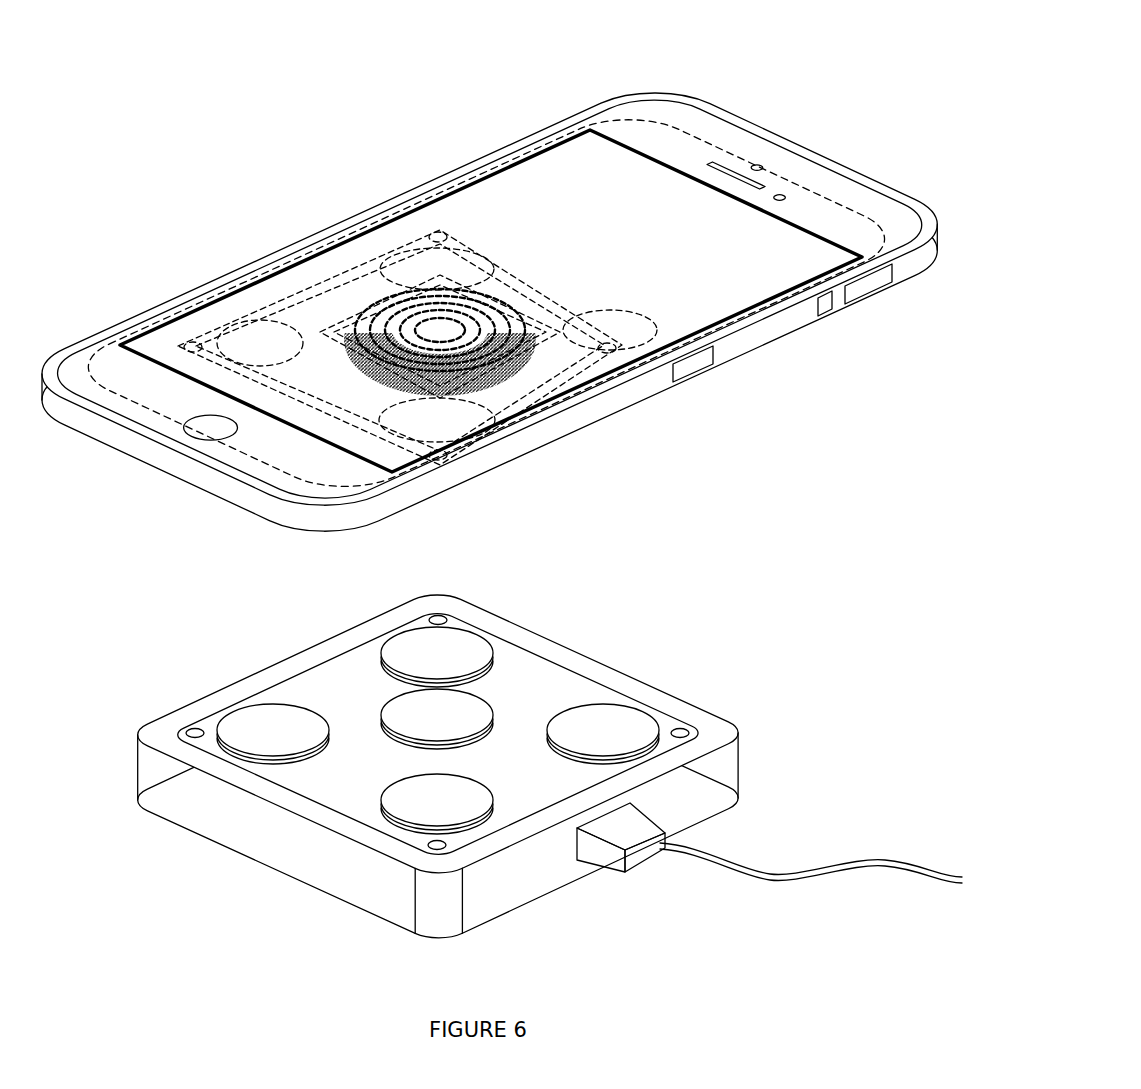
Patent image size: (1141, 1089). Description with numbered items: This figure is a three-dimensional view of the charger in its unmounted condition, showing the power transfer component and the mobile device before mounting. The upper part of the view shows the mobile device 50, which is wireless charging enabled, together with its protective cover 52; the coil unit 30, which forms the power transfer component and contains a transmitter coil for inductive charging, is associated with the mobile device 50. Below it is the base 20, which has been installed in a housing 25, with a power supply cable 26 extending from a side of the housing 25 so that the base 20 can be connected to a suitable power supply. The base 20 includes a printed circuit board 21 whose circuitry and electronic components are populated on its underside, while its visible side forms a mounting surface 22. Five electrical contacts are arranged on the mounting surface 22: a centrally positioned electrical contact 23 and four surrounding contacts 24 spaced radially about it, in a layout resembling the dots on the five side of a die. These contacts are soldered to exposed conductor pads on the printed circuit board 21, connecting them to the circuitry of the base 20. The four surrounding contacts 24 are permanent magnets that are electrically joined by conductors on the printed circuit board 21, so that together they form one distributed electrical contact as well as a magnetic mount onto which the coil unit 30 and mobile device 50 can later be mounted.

The base 20 is at (172, 695).
The printed circuit board 21 is at (310, 685).
The mounting surface 22 is at (347, 793).
The centrally positioned electrical contact 23 is at (418, 713).
The surrounding contacts 24 is at (425, 815).
The housing 25 is at (710, 782).
The power supply cable 26 is at (767, 877).
The coil unit 30 is at (318, 296).
The mobile device 50 is at (685, 155).
The protective cover 52 is at (906, 272).